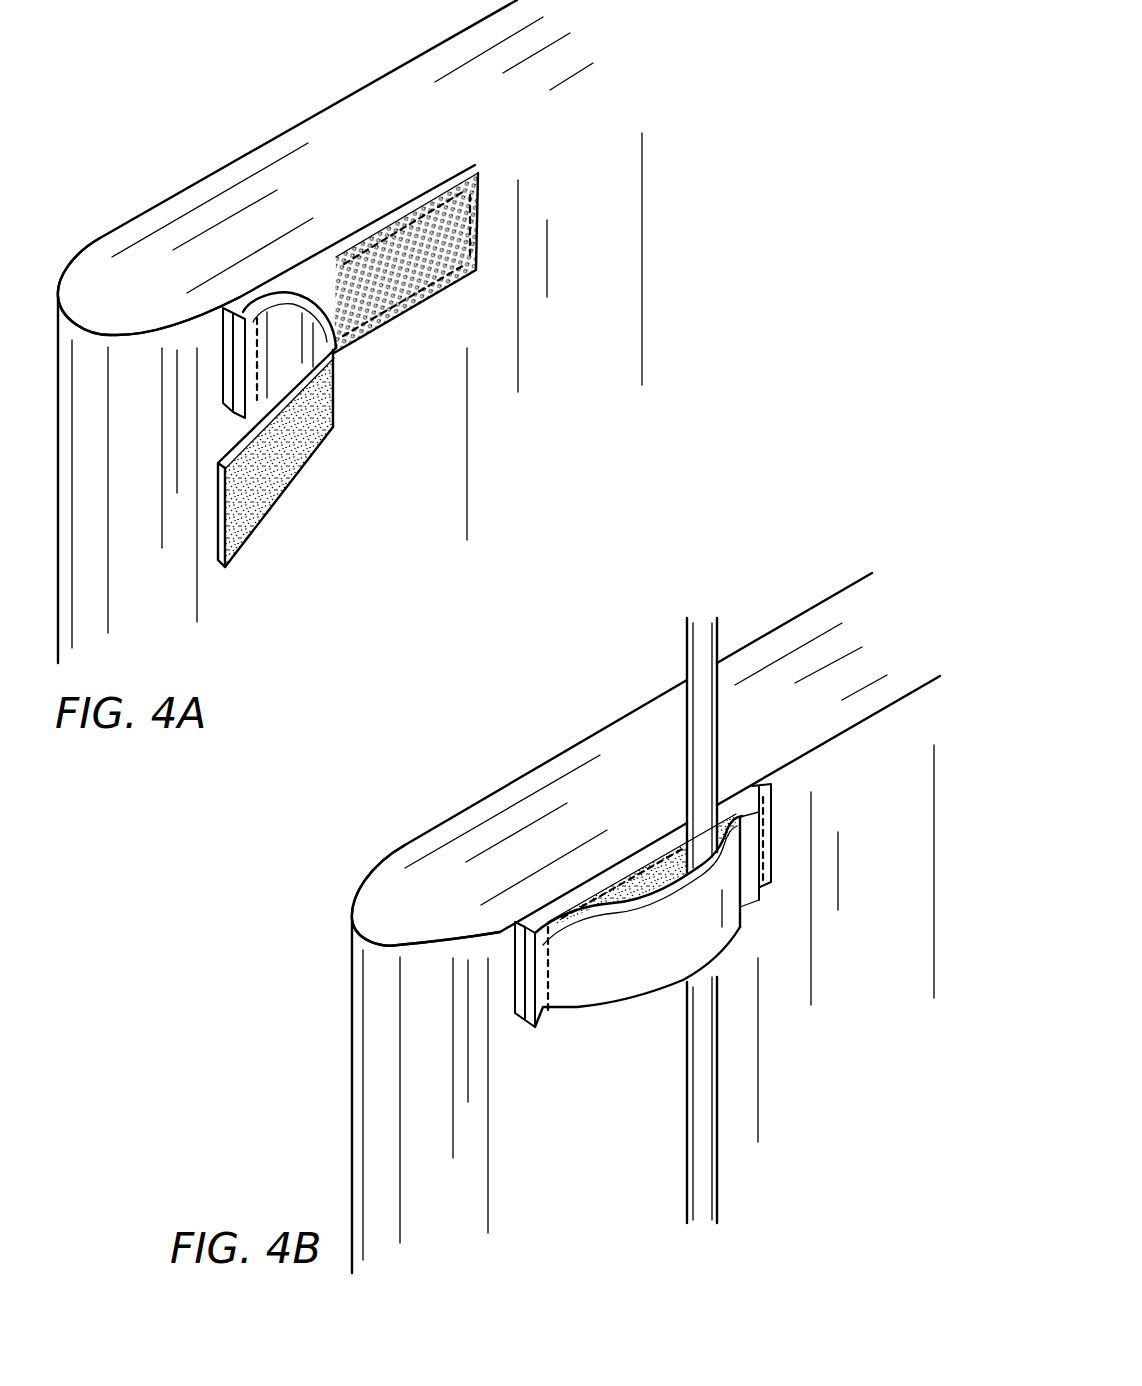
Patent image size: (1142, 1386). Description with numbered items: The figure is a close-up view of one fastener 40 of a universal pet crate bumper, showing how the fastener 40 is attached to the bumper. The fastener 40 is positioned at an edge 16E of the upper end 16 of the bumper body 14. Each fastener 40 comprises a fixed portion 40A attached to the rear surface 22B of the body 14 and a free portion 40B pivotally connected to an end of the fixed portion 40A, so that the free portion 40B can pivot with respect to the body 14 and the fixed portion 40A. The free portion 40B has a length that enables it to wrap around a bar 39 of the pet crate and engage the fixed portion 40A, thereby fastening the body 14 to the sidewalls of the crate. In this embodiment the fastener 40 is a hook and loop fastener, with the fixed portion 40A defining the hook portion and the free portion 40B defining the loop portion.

In FIG. 4A, the body 14 is at (222, 165).
In FIG. 4B, the body 14 is at (557, 750).
In FIG. 4A, the upper end 16 is at (402, 88).
In FIG. 4B, the upper end 16 is at (789, 670).
In FIG. 4A, the edge 16E is at (152, 327).
In FIG. 4B, the edge 16E is at (473, 933).
In FIG. 4A, the rear surface 22B is at (580, 166).
In FIG. 4B, the rear surface 22B is at (877, 787).
In FIG. 4B, the bar 39 is at (680, 653).
In FIG. 4A, the fastener 40 is at (305, 376).
In FIG. 4B, the fastener 40 is at (643, 948).
In FIG. 4A, the fixed portion 40A is at (397, 217).
In FIG. 4B, the fixed portion 40A is at (662, 842).
In FIG. 4A, the free portion 40B is at (223, 520).
In FIG. 4B, the free portion 40B is at (612, 977).